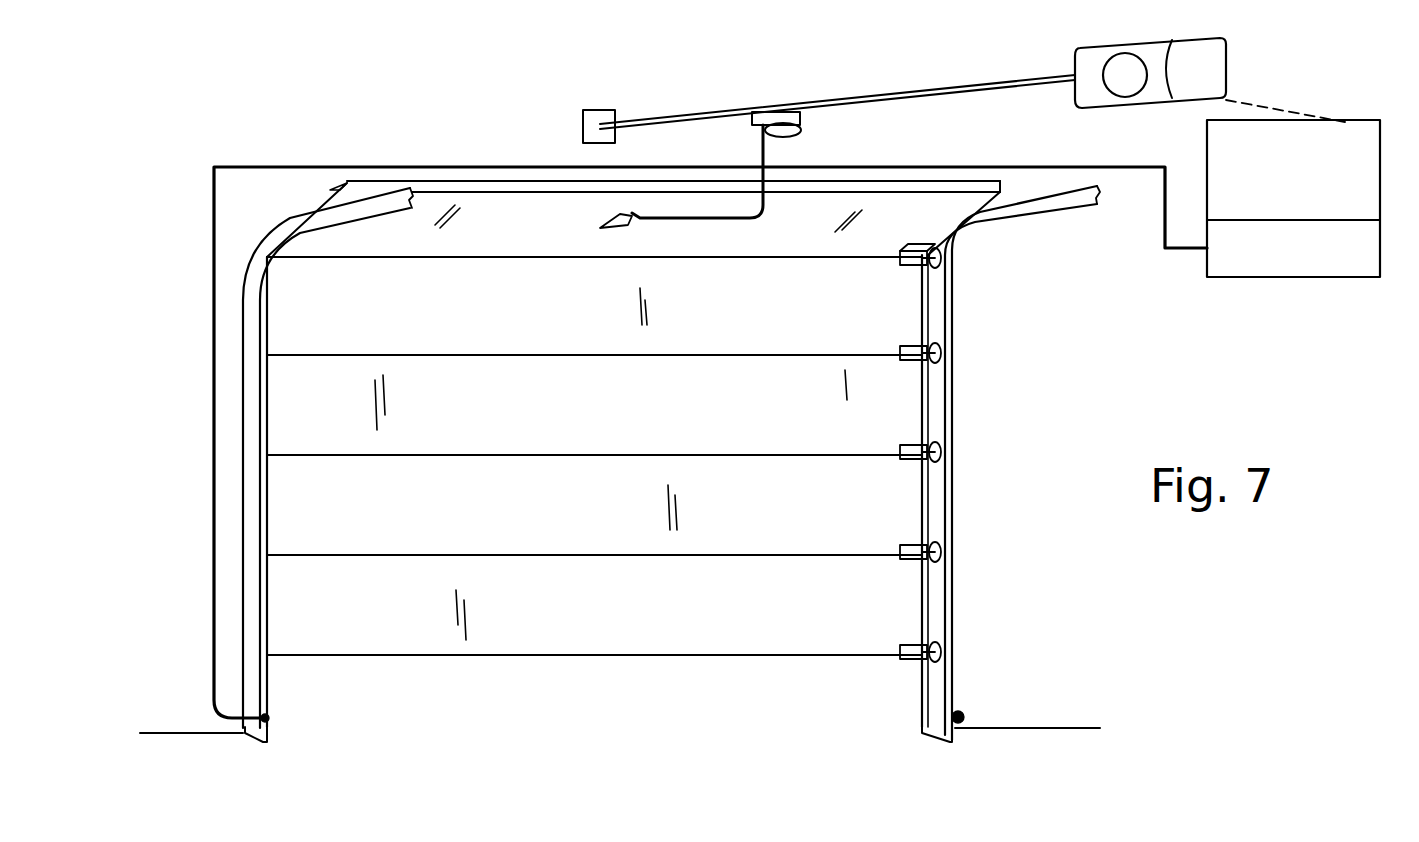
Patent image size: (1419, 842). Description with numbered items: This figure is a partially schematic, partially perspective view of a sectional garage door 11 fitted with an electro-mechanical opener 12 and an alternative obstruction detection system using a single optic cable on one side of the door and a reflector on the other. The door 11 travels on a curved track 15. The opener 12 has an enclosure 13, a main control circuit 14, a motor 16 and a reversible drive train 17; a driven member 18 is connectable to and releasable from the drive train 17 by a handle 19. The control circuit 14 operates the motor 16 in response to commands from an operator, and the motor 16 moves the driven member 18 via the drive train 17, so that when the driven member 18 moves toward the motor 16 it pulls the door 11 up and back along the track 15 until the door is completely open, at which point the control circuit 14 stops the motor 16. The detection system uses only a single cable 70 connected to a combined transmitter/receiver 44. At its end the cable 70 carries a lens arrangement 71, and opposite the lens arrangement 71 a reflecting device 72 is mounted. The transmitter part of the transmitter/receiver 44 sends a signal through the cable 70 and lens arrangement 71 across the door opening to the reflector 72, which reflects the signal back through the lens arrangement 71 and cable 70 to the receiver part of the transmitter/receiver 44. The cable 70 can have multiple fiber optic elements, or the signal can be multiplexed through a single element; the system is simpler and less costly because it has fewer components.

The sectional garage door 11 is at (613, 413).
The electro-mechanical opener 12 is at (1225, 39).
The enclosure 13 is at (1212, 68).
The main control circuit 14 is at (1297, 213).
The curved track 15 is at (347, 212).
The motor 16 is at (1118, 55).
The reversible drive train 17 is at (850, 98).
The driven member 18 is at (773, 112).
The handle 19 is at (797, 134).
The transmitter/receiver 44 is at (1283, 280).
The cable 70 is at (212, 515).
The lens arrangement 71 is at (270, 718).
The reflecting device 72 is at (965, 712).